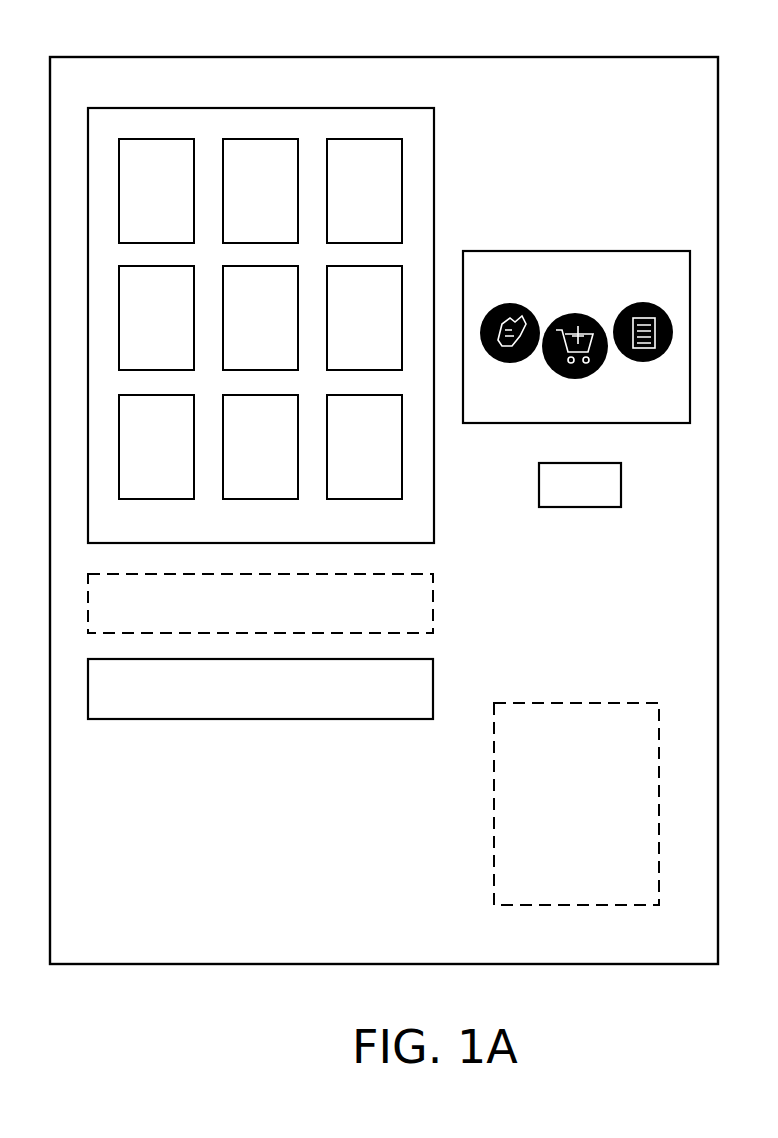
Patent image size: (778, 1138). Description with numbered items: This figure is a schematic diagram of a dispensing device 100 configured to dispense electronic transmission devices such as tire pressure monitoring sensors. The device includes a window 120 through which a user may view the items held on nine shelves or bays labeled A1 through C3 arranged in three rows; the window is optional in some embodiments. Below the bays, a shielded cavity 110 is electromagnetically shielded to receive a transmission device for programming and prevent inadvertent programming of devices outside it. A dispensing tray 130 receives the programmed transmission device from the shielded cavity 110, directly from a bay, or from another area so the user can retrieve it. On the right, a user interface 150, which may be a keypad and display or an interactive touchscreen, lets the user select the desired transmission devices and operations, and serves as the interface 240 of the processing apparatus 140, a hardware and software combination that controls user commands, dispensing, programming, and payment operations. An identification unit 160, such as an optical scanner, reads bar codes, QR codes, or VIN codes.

The dispensing device 100 is at (308, 57).
The shielded cavity 110 is at (433, 614).
The window 120 is at (434, 148).
The dispensing tray 130 is at (433, 688).
The processing apparatus 140 is at (572, 703).
The user interface 150 is at (576, 309).
The interface 240 is at (572, 251).
The identification unit 160 is at (621, 485).